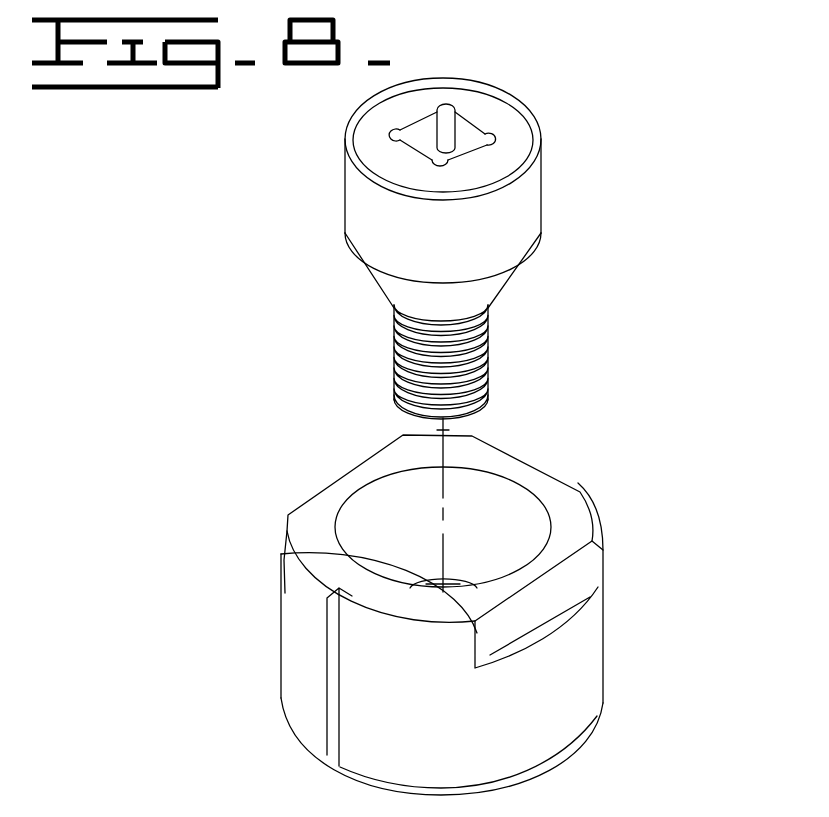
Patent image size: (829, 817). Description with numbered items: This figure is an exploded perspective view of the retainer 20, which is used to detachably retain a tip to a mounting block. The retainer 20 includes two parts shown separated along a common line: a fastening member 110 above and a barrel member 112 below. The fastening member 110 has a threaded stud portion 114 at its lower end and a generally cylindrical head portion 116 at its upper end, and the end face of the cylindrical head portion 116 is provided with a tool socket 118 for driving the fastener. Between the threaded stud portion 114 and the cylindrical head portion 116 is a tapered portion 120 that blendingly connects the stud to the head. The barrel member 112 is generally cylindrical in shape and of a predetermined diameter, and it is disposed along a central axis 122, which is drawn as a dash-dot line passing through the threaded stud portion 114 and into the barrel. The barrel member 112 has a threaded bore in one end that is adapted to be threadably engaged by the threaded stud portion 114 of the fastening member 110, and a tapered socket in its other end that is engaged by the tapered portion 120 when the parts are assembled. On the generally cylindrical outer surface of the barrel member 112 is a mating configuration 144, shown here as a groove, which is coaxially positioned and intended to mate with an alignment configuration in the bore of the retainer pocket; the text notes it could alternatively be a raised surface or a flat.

The retainer 20 is at (493, 582).
The fastening member 110 is at (471, 335).
The barrel member 112 is at (474, 615).
The threaded stud portion 114 is at (488, 343).
The cylindrical head portion 116 is at (344, 197).
The tool socket 118 is at (466, 122).
The tapered portion 120 is at (510, 275).
The central axis 122 is at (473, 423).
The mating configuration 144 is at (337, 737).